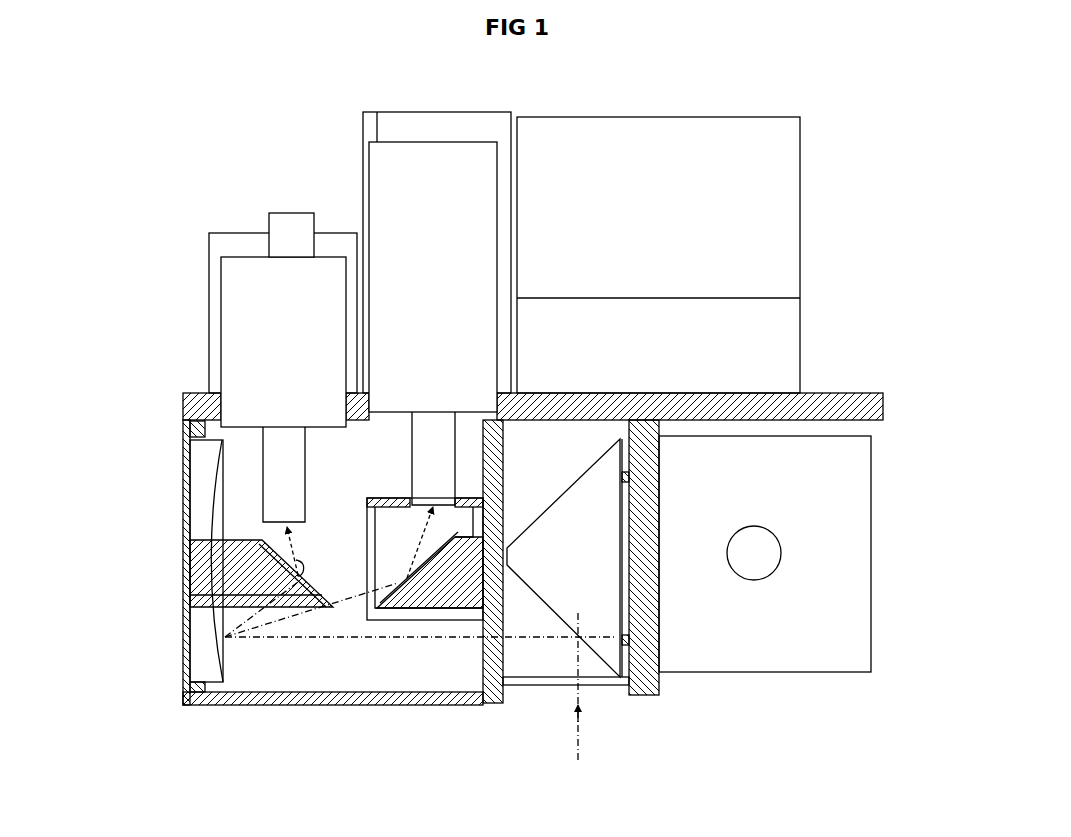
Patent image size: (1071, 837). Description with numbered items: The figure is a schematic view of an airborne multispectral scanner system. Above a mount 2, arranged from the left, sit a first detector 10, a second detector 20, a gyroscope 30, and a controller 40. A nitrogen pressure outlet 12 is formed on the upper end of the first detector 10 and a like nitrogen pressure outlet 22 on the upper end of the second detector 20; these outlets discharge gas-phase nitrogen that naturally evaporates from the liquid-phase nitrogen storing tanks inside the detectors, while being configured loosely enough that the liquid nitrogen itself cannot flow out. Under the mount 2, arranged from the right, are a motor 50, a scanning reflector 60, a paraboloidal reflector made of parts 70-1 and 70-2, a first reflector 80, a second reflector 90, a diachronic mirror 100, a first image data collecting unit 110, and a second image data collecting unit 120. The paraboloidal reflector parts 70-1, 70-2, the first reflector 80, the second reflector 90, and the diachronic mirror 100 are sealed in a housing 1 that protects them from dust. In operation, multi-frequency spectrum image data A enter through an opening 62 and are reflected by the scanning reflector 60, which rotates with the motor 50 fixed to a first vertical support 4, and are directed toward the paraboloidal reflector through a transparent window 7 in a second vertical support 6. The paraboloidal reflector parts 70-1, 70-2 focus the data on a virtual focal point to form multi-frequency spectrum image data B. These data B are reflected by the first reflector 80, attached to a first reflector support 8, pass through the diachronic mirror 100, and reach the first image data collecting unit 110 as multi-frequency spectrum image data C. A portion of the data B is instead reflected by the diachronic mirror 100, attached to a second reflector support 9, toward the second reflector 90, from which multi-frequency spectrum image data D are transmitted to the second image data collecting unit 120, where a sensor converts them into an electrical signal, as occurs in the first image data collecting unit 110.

The housing 1 is at (248, 710).
The mount 2 is at (883, 405).
The first vertical support 4 is at (643, 690).
The second vertical support 6 is at (493, 690).
The transparent window 7 is at (512, 648).
The first reflector support 8 is at (450, 613).
The second reflector support 9 is at (197, 572).
The first detector 10 is at (240, 337).
The nitrogen pressure outlet 12 is at (278, 223).
The second detector 20 is at (392, 167).
The nitrogen pressure outlet 22 is at (388, 122).
The gyroscope 30 is at (800, 205).
The controller 40 is at (775, 342).
The motor 50 is at (852, 568).
The scanning reflector 60 is at (590, 613).
The opening 62 is at (527, 685).
The paraboloidal reflector part 70-1 is at (198, 650).
The paraboloidal reflector part 70-2 is at (198, 517).
The first reflector 80 is at (412, 613).
The second reflector 90 is at (305, 590).
The diachronic mirror 100 is at (365, 592).
The first image data collecting unit 110 is at (222, 452).
The second image data collecting unit 120 is at (280, 480).
The multi-frequency spectrum image data A is at (580, 697).
The multi-frequency spectrum image data B is at (421, 622).
The multi-frequency spectrum image data C is at (418, 542).
The multi-frequency spectrum image data D is at (301, 551).